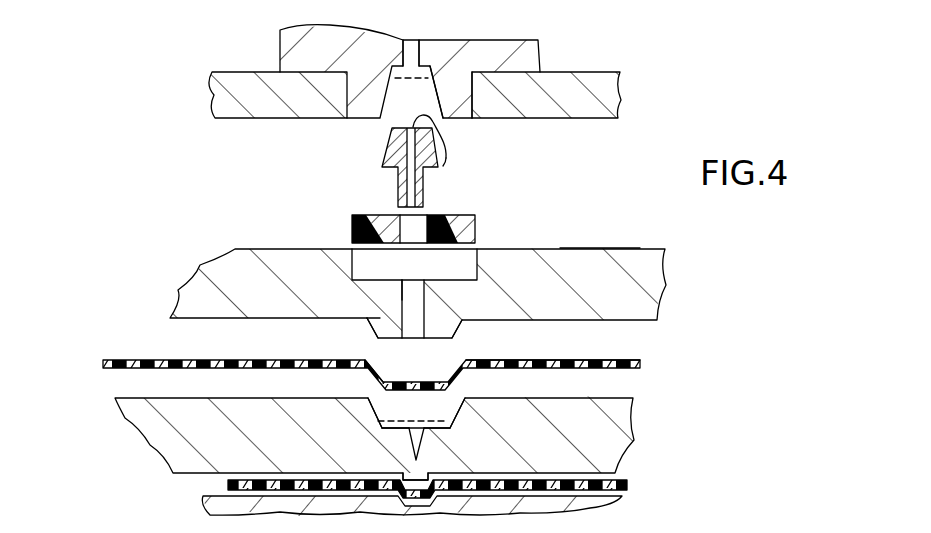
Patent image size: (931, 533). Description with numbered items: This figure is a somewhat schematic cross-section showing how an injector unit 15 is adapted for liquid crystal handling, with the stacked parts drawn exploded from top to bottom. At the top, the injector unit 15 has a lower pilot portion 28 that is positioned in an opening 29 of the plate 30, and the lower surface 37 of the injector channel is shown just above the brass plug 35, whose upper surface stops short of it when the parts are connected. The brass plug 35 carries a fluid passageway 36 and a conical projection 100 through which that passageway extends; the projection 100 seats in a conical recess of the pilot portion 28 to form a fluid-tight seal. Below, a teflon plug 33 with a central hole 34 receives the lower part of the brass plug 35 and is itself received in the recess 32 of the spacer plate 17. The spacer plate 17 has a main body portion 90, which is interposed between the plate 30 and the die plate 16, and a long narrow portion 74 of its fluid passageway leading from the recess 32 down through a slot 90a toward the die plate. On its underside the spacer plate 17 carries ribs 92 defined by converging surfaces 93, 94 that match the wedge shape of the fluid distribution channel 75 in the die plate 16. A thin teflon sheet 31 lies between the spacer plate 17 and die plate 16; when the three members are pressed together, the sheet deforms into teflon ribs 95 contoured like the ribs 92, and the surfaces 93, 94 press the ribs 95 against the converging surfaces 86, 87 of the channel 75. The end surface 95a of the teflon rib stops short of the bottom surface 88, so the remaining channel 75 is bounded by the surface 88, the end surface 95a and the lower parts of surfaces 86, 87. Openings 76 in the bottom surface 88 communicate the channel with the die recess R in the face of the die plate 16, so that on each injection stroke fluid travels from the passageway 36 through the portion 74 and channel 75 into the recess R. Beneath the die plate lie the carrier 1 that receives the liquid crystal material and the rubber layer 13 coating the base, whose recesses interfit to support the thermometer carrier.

The carrier 1 is at (630, 487).
The rubber layer 13 is at (625, 500).
The injector unit 15 is at (552, 52).
The die plate 16 is at (625, 422).
The spacer plate 17 is at (606, 234).
The lower pilot portion 28 is at (463, 94).
The opening 29 is at (467, 116).
The plate 30 is at (612, 78).
The teflon sheet 31 is at (103, 362).
The recess 32 is at (352, 266).
The teflon plug 33 is at (352, 228).
The central hole 34 is at (424, 224).
The brass plug 35 is at (440, 167).
The fluid passageway 36 is at (447, 142).
The lower surface of injector channel 37 is at (420, 60).
The long narrow portion 74 is at (421, 298).
The fluid distribution channel 75 is at (477, 446).
The opening 76 is at (418, 452).
The converging surface 86 is at (377, 416).
The converging surface 87 is at (456, 426).
The bottom surface 88 is at (402, 428).
The main body portion 90 is at (662, 287).
The slot 90a is at (421, 341).
The rib 92 is at (355, 325).
The converging surface 93 is at (378, 330).
The converging surface 94 is at (443, 328).
The teflon rib 95 is at (498, 361).
The end surface 95a is at (357, 372).
The conical projection 100 is at (388, 148).
The die recess R is at (410, 470).